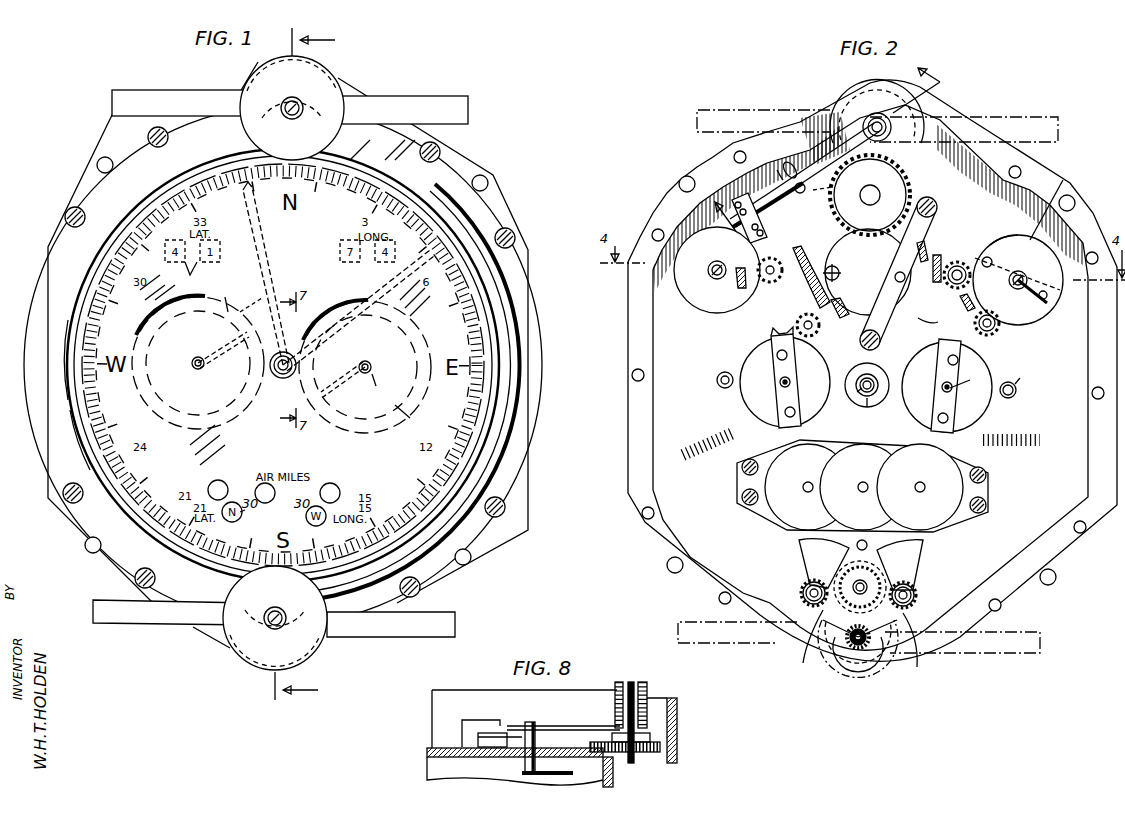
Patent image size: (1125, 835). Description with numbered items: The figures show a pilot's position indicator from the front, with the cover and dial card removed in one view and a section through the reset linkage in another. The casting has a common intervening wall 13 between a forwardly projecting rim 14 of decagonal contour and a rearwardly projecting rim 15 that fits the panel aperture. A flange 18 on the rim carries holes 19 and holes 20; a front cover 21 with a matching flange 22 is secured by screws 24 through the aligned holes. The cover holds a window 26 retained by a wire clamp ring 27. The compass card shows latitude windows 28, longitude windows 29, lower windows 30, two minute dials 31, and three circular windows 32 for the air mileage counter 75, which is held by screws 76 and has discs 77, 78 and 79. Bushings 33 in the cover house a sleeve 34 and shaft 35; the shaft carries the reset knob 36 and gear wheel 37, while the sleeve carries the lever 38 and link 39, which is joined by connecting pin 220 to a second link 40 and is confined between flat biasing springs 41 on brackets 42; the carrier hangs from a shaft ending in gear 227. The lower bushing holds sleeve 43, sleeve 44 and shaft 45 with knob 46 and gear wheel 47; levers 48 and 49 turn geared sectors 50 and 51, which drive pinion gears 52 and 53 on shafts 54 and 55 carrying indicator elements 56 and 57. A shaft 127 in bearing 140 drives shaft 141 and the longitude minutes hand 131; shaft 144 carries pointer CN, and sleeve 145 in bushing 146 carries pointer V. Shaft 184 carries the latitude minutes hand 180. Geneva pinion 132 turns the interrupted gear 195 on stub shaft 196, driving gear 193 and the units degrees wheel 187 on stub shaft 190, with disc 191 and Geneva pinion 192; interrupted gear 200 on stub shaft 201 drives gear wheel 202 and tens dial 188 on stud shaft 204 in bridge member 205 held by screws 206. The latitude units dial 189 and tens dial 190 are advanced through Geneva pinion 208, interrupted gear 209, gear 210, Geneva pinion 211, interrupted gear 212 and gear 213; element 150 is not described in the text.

In FIG. 8, the common intervening wall 13 is at (440, 746).
In FIG. 2, the forwardly projecting rim 14 is at (878, 85).
In FIG. 8, the rearwardly projecting rim 15 is at (613, 778).
In FIG. 2, the flange 18 is at (632, 395).
In FIG. 2, the holes 19 is at (684, 178).
In FIG. 2, the holes 20 is at (734, 156).
In FIG. 1, the front cover 21 is at (510, 322).
In FIG. 1, the flange 22 is at (512, 470).
In FIG. 1, the screws 24 is at (148, 137).
In FIG. 1, the window 26 is at (66, 333).
In FIG. 1, the wire clamp ring 27 is at (70, 437).
In FIG. 1, the windows 28 is at (198, 310).
In FIG. 1, the windows 29 is at (372, 270).
In FIG. 1, the circular windows 30 is at (249, 504).
In FIG. 1, the 60-minute indicating dials 31 is at (222, 292).
In FIG. 1, the circular windows 32 is at (212, 482).
In FIG. 8, the bushings 33 is at (614, 690).
In FIG. 8, the sleeve 34 is at (647, 688).
In FIG. 8, the shaft 35 is at (631, 682).
In FIG. 1, the reset knob 36 is at (338, 96).
In FIG. 2, the gear wheel 37 is at (850, 100).
In FIG. 1, the two-armed horizontal lever 38 is at (180, 94).
In FIG. 2, the link 39 is at (817, 160).
In FIG. 2, the link 40 is at (800, 237).
In FIG. 2, the flat biasing springs 41 is at (760, 203).
In FIG. 2, the brackets 42 is at (740, 230).
In FIG. 2, the sleeve 43 is at (845, 652).
In FIG. 2, the sleeve 44 is at (868, 648).
In FIG. 2, the shaft 45 is at (858, 665).
In FIG. 1, the knob 46 is at (318, 645).
In FIG. 2, the gear wheel 47 is at (840, 653).
In FIG. 1, the horizontal lever 48 is at (176, 626).
In FIG. 1, the lever 49 is at (382, 638).
In FIG. 2, the geared sector 50 is at (823, 627).
In FIG. 2, the geared sector 51 is at (900, 630).
In FIG. 2, the pinion gear 52 is at (806, 600).
In FIG. 2, the pinion gear 53 is at (917, 603).
In FIG. 2, the shaft 54 is at (811, 596).
In FIG. 2, the shaft 55 is at (907, 598).
In FIG. 2, the indicator element 56 is at (798, 543).
In FIG. 2, the indicator element 57 is at (923, 550).
In FIG. 2, the air mileage counter 75 is at (967, 448).
In FIG. 2, the screws 76 is at (742, 496).
In FIG. 2, the numeral bearing disc 77 is at (913, 450).
In FIG. 2, the numeral bearing disc 78 is at (870, 447).
In FIG. 2, the numeral bearing disc 79 is at (797, 452).
In FIG. 2, the shaft 127 is at (1016, 391).
In FIG. 1, the longitude minutes hand 131 is at (340, 380).
In FIG. 2, the Geneva pinion 132 is at (960, 408).
In FIG. 2, the bushing type bearing 140 is at (1028, 374).
In FIG. 1, the shaft 141 is at (374, 387).
In FIG. 2, the shaft 144 is at (862, 390).
In FIG. 2, the sleeve 145 is at (873, 382).
In FIG. 2, the bushing 146 is at (868, 403).
In FIG. 2, the center gear 150 is at (867, 570).
In FIG. 1, the minutes hand 180 is at (248, 298).
In FIG. 1, the shaft 184 is at (200, 372).
In FIG. 2, the units degrees register wheel 187 is at (1058, 201).
In FIG. 2, the tens degrees dial 188 is at (932, 327).
In FIG. 2, the units degrees dial 189 is at (840, 320).
In FIG. 2, the stub shaft 190 is at (692, 310).
In FIG. 2, the disc 191 is at (1030, 240).
In FIG. 2, the Geneva pinion 192 is at (987, 256).
In FIG. 2, the gear 193 is at (959, 308).
In FIG. 2, the interrupted gear 195 is at (998, 330).
In FIG. 2, the stub shaft 196 is at (987, 335).
In FIG. 2, the interrupted gear 200 is at (980, 247).
In FIG. 2, the stub shaft 201 is at (955, 288).
In FIG. 2, the gear wheel 202 is at (940, 247).
In FIG. 2, the stud shaft 204 is at (900, 283).
In FIG. 2, the bridge member 205 is at (925, 248).
In FIG. 2, the screws 206 is at (930, 205).
In FIG. 2, the Geneva pinion 208 is at (766, 338).
In FIG. 2, the interrupted gear 209 is at (798, 326).
In FIG. 2, the gear 210 is at (800, 292).
In FIG. 2, the Geneva pinion 211 is at (800, 253).
In FIG. 2, the interrupted gear 212 is at (768, 258).
In FIG. 2, the gear 213 is at (738, 290).
In FIG. 2, the connecting pin 220 is at (777, 170).
In FIG. 2, the gear 227 is at (898, 186).
In FIG. 1, the dial pointer V is at (266, 273).
In FIG. 1, the dial pointer CN is at (392, 290).